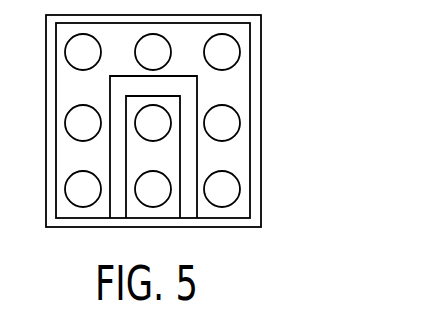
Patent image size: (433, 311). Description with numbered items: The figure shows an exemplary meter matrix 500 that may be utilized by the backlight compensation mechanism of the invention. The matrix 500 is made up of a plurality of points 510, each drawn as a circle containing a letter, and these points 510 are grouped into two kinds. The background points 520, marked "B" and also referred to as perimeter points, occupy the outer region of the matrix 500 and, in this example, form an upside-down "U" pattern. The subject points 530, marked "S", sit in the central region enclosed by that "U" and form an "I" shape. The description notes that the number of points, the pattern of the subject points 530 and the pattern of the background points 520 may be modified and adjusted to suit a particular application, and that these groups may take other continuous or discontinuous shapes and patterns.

The meter matrix 500 is at (190, 121).
The points 510 is at (261, 188).
The background points 520 is at (261, 50).
The subject points 530 is at (180, 157).